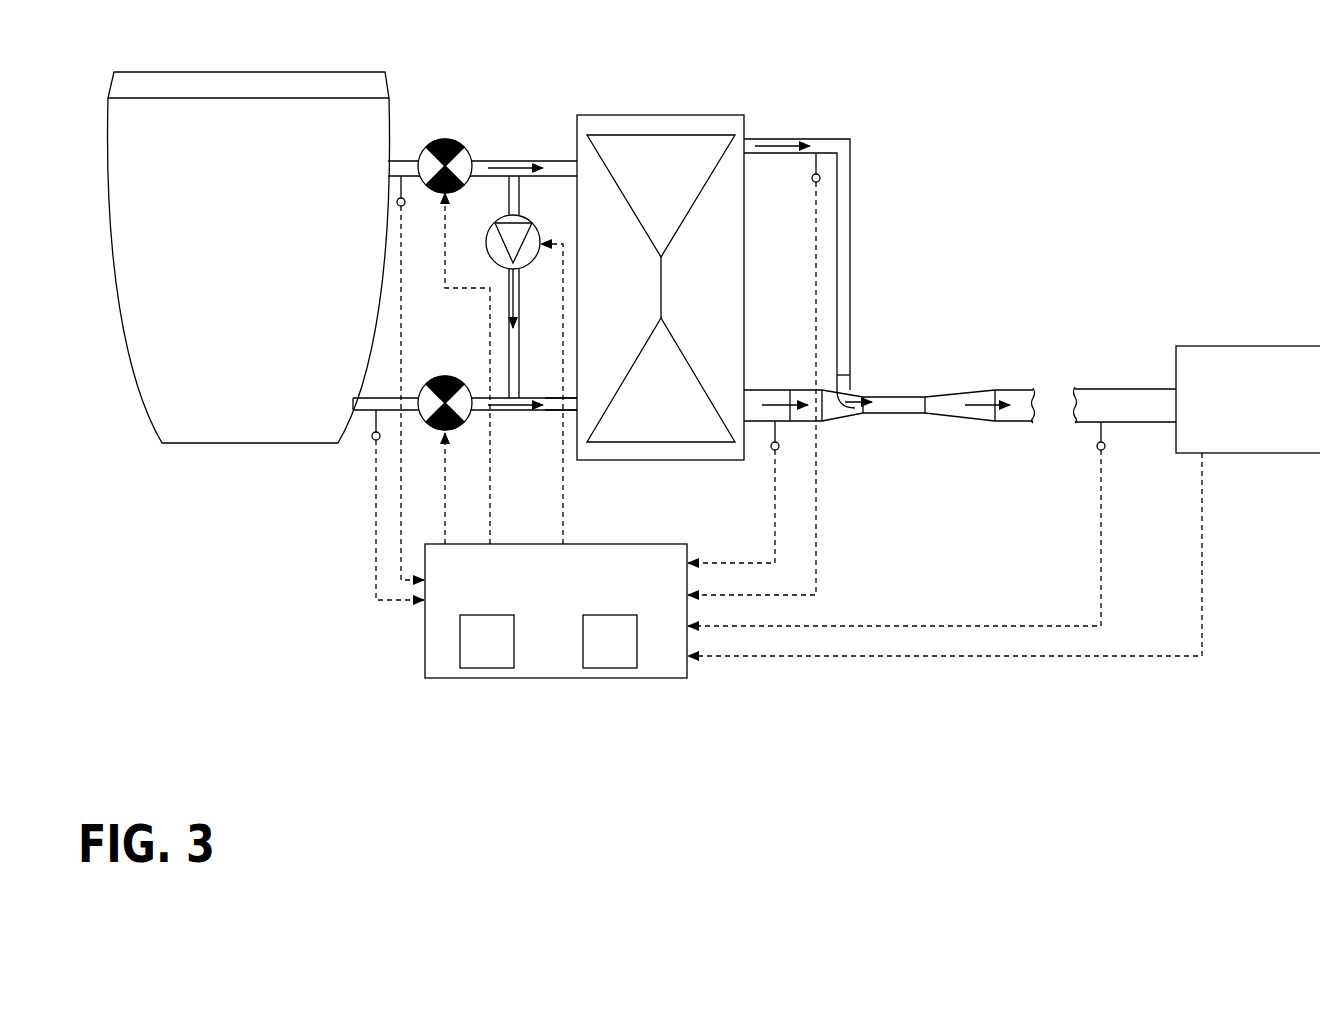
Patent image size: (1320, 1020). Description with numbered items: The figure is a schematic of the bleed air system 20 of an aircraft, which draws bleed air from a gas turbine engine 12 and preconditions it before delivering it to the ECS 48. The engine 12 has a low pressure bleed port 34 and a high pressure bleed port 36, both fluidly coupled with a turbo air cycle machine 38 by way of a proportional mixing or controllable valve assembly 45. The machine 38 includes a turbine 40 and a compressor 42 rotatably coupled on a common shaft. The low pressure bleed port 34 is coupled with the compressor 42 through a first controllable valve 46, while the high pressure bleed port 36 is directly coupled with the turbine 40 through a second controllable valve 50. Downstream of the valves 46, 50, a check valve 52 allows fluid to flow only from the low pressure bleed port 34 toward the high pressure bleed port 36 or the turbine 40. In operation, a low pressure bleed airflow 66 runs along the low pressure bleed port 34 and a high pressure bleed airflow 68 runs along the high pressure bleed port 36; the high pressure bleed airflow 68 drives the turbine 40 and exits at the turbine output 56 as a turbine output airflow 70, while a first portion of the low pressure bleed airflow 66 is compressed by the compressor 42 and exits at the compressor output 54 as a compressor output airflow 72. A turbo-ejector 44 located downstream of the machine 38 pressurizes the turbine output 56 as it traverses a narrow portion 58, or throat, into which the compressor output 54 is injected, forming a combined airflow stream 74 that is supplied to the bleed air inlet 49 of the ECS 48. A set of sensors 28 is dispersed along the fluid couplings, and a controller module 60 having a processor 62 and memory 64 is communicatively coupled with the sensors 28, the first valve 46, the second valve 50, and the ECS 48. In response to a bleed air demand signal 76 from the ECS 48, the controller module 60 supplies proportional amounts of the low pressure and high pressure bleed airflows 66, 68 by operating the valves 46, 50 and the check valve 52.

The gas turbine engine 12 is at (230, 262).
The bleed air system 20 is at (674, 72).
The sensors 28 is at (403, 206).
The low pressure bleed port 34 is at (398, 158).
The high pressure bleed port 36 is at (358, 412).
The turbo air cycle machine 38 is at (693, 114).
The turbine 40 is at (707, 430).
The compressor 42 is at (688, 178).
The turbo-ejector 44 is at (881, 380).
The controllable valve assembly 45 is at (463, 115).
The first controllable valve 46 is at (470, 148).
The ECS 48 is at (1242, 398).
The bleed air inlet 49 is at (1166, 380).
The second controllable valve 50 is at (432, 378).
The check valve 52 is at (533, 225).
The compressor output 54 is at (753, 132).
The turbine output 56 is at (754, 428).
The narrow portion 58 is at (898, 415).
The controller module 60 is at (542, 646).
The processor 62 is at (479, 650).
The memory 64 is at (602, 650).
The low pressure bleed airflow 66 is at (514, 162).
The high pressure bleed airflow 68 is at (510, 412).
The turbine output airflow 70 is at (780, 407).
The compressor output airflow 72 is at (784, 140).
The combined airflow stream 74 is at (980, 422).
The bleed air demand signal 76 is at (1202, 555).